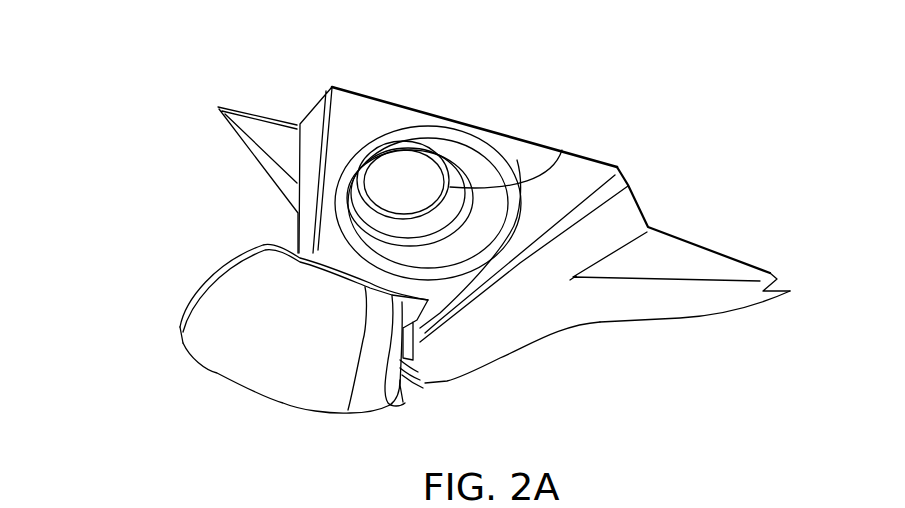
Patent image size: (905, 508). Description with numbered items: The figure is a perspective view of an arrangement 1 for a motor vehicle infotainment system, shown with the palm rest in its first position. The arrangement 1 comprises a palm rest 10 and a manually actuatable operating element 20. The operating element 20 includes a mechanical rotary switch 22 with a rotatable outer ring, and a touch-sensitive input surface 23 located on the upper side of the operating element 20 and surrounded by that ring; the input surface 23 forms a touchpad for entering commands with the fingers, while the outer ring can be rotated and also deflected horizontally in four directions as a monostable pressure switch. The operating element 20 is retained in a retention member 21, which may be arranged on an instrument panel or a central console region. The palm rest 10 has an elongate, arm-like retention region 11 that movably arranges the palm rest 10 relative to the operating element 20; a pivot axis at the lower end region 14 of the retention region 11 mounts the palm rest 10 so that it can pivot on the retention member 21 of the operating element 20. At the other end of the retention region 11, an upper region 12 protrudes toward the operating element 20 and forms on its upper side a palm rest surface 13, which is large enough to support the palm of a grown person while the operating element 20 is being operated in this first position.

The arrangement 1 is at (540, 21).
The palm rest 10 is at (212, 243).
The retention region 11 is at (412, 386).
The upper region 12 is at (217, 317).
The palm rest surface 13 is at (264, 370).
The lower end region 14 is at (413, 372).
The operating element 20 is at (465, 83).
The retention member 21 is at (613, 235).
The mechanical rotary switch 22 is at (562, 150).
The touch-sensitive input surface 23 is at (410, 168).